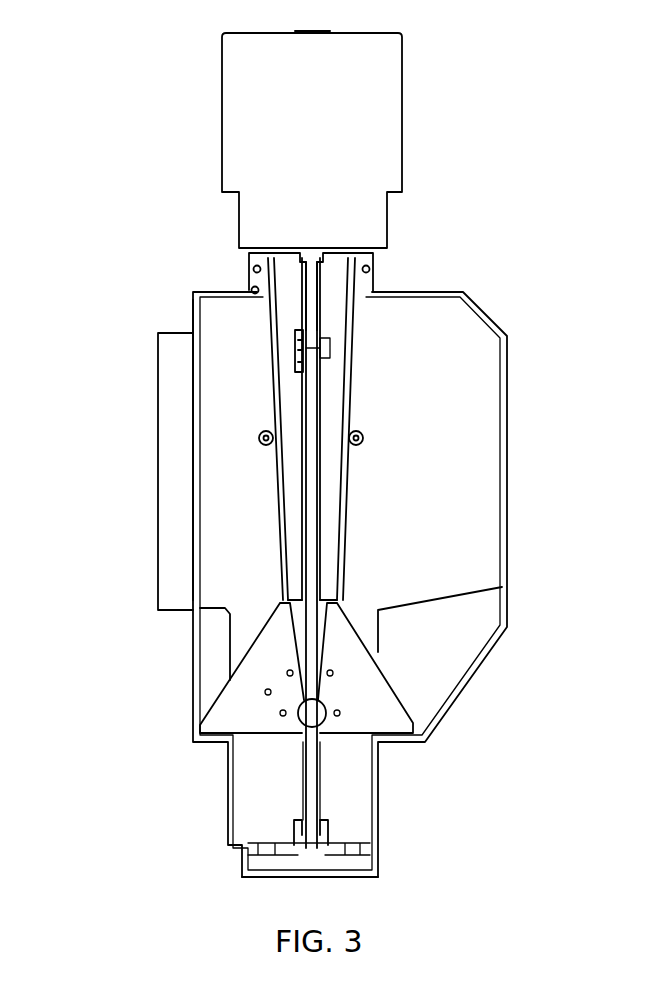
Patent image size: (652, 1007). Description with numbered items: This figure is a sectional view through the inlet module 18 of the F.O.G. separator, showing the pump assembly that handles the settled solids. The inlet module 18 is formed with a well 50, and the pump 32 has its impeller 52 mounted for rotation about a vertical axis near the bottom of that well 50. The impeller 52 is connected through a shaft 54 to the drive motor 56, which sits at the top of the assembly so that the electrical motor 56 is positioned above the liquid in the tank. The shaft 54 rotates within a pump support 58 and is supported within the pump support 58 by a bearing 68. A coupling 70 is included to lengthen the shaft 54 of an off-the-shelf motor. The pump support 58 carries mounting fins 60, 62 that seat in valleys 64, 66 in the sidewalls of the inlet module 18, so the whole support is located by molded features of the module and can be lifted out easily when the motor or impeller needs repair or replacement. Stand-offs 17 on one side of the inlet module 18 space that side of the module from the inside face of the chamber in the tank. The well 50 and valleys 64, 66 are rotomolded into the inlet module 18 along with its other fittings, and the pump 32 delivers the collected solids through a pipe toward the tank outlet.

The stand-offs 17 is at (160, 490).
The inlet module 18 is at (508, 362).
The pump 32 is at (315, 785).
The well 50 is at (357, 878).
The impeller 52 is at (330, 840).
The shaft 54 is at (313, 500).
The drive motor 56 is at (336, 120).
The pump support 58 is at (193, 373).
The mounting fin 60 is at (233, 698).
The mounting fin 62 is at (400, 707).
The valley 64 is at (212, 640).
The valley 66 is at (467, 620).
The bearing 68 is at (292, 720).
The coupling 70 is at (295, 347).